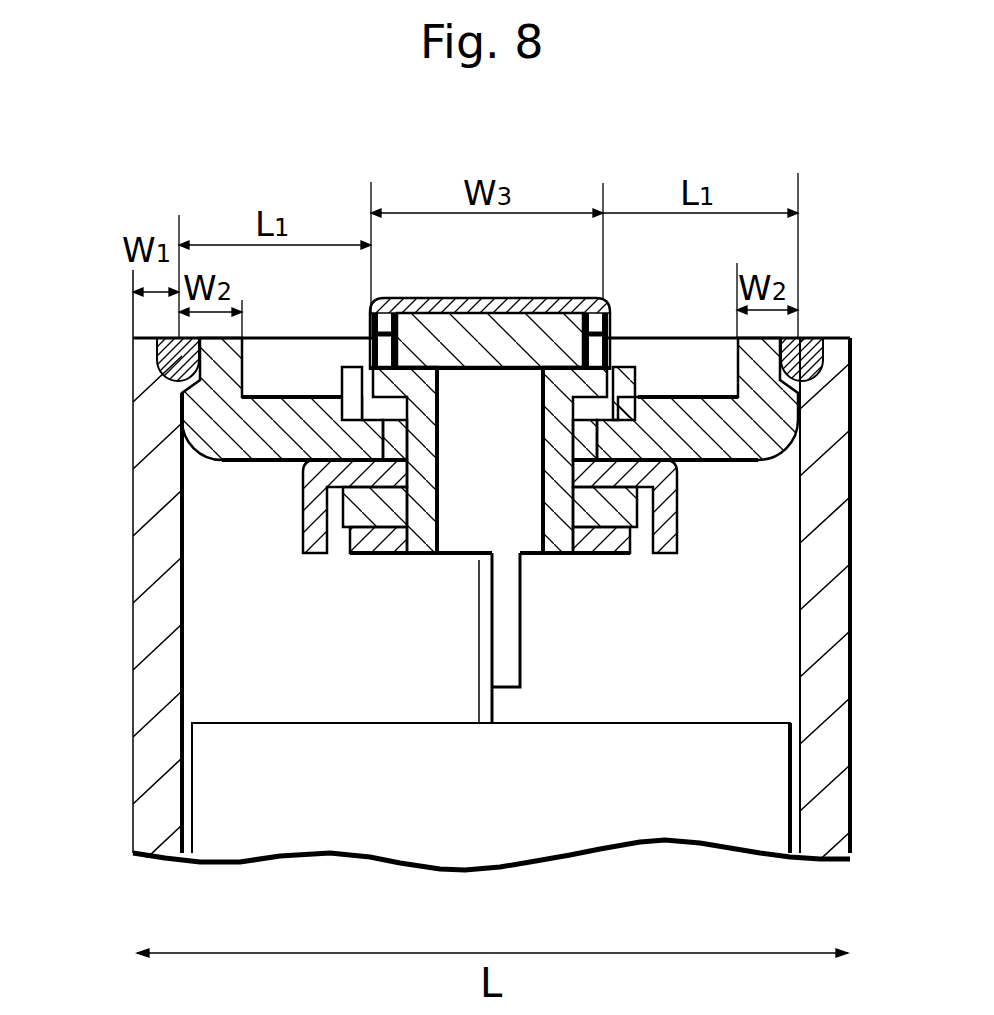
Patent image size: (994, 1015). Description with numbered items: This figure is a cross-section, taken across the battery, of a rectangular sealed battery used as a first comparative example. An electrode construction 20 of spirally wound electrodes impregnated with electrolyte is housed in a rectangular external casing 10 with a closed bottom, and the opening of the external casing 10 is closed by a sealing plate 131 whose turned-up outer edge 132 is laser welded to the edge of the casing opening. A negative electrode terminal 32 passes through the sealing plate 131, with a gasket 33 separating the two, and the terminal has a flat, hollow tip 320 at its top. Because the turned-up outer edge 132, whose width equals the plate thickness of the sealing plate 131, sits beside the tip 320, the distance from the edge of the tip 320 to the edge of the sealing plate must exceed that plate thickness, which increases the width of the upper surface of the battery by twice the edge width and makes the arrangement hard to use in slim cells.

The external casing 10 is at (825, 462).
The electrode construction 20 is at (240, 781).
The negative electrode terminal 32 is at (474, 297).
The tip 320 is at (524, 298).
The gasket 33 is at (348, 366).
The sealing plate 131 is at (674, 420).
The turned-up outer edge 132 is at (762, 337).